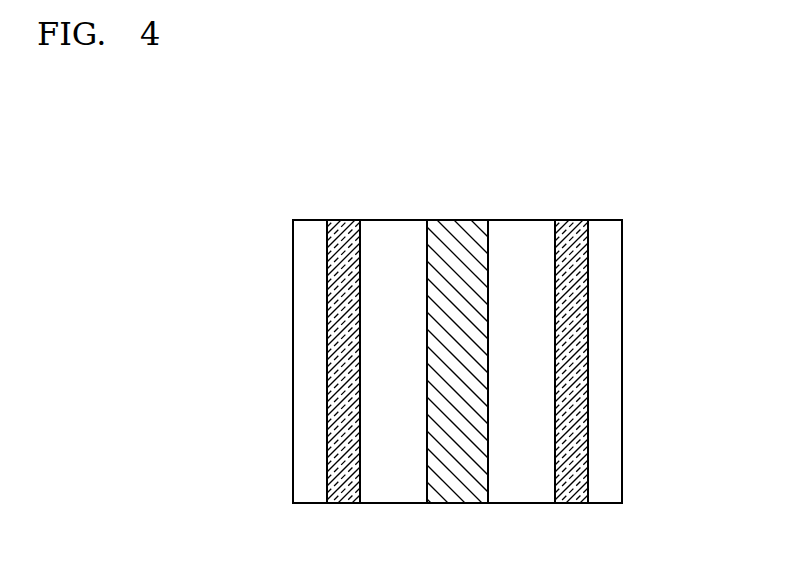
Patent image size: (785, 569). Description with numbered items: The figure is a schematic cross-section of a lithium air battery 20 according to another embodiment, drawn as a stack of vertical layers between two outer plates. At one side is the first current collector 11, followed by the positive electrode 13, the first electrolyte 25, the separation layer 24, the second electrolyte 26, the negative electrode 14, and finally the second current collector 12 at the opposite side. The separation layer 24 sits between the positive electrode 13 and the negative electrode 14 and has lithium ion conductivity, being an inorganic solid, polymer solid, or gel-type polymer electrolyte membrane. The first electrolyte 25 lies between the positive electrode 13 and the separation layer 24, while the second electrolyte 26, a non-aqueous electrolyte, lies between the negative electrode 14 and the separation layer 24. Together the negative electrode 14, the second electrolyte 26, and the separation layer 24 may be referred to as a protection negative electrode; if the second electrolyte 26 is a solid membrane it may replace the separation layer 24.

The lithium air battery 20 is at (655, 166).
The first current collector 11 is at (309, 231).
The second current collector 12 is at (606, 231).
The positive electrode 13 is at (345, 231).
The negative electrode 14 is at (573, 231).
The separation layer 24 is at (461, 231).
The first electrolyte 25 is at (398, 231).
The second electrolyte 26 is at (524, 231).